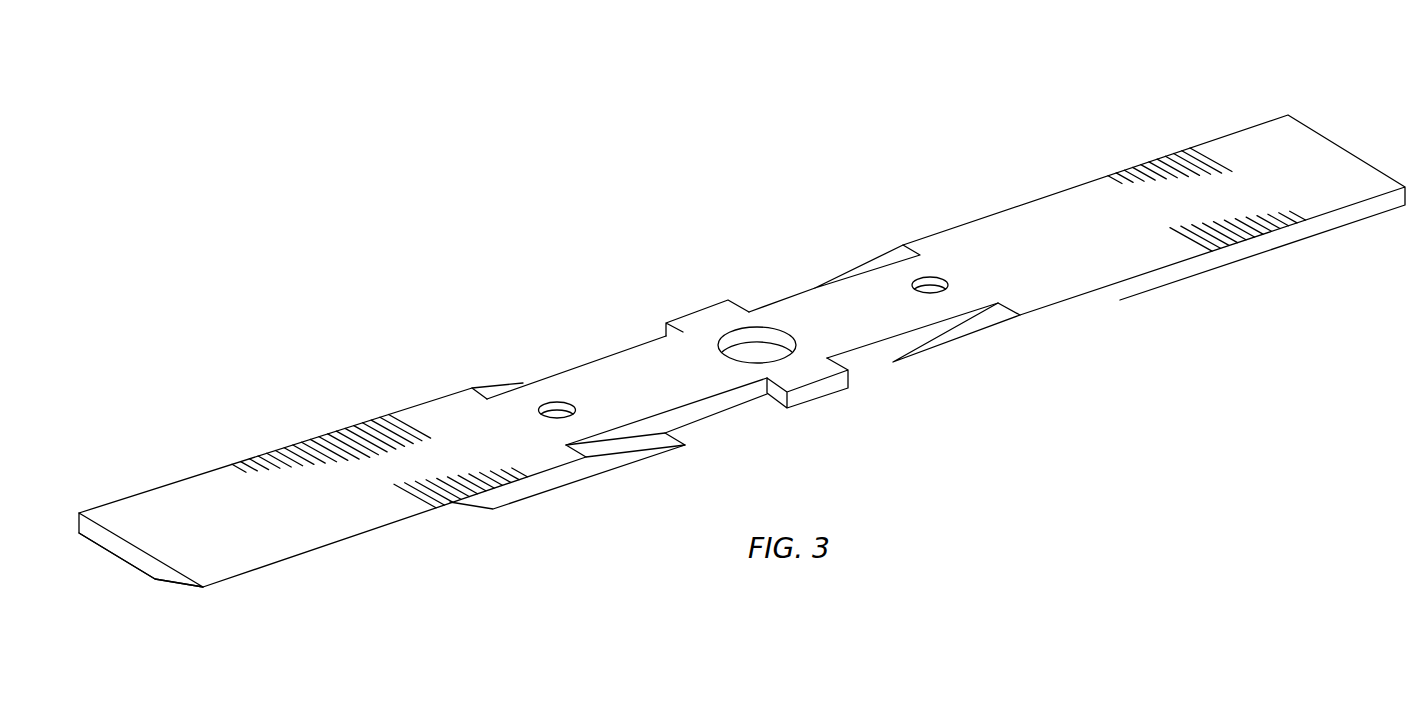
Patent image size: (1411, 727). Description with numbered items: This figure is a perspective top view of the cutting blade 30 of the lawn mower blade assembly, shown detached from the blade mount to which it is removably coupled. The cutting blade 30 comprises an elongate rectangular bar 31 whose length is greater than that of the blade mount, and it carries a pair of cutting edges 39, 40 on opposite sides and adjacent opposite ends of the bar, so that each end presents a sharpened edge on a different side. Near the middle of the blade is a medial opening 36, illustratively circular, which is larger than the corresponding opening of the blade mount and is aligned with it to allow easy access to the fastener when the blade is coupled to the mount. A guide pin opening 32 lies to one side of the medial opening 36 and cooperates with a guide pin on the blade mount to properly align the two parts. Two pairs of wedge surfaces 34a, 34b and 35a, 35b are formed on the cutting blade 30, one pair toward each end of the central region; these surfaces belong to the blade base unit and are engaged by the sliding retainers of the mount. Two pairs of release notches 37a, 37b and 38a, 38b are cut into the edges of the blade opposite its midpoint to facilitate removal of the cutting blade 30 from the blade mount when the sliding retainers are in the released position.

The cutting blade 30 is at (404, 402).
The elongate rectangular bar 31 is at (445, 417).
The guide pin opening 32 is at (548, 420).
The wedge surface 34a is at (505, 387).
The wedge surface 34b is at (622, 440).
The wedge surface 35a is at (877, 264).
The wedge surface 35b is at (928, 354).
The medial opening 36 is at (750, 348).
The release notch 37a is at (585, 362).
The release notch 37b is at (722, 424).
The release notch 38a is at (782, 298).
The release notch 38b is at (877, 383).
The cutting edge 39 is at (272, 565).
The cutting edge 40 is at (1215, 138).